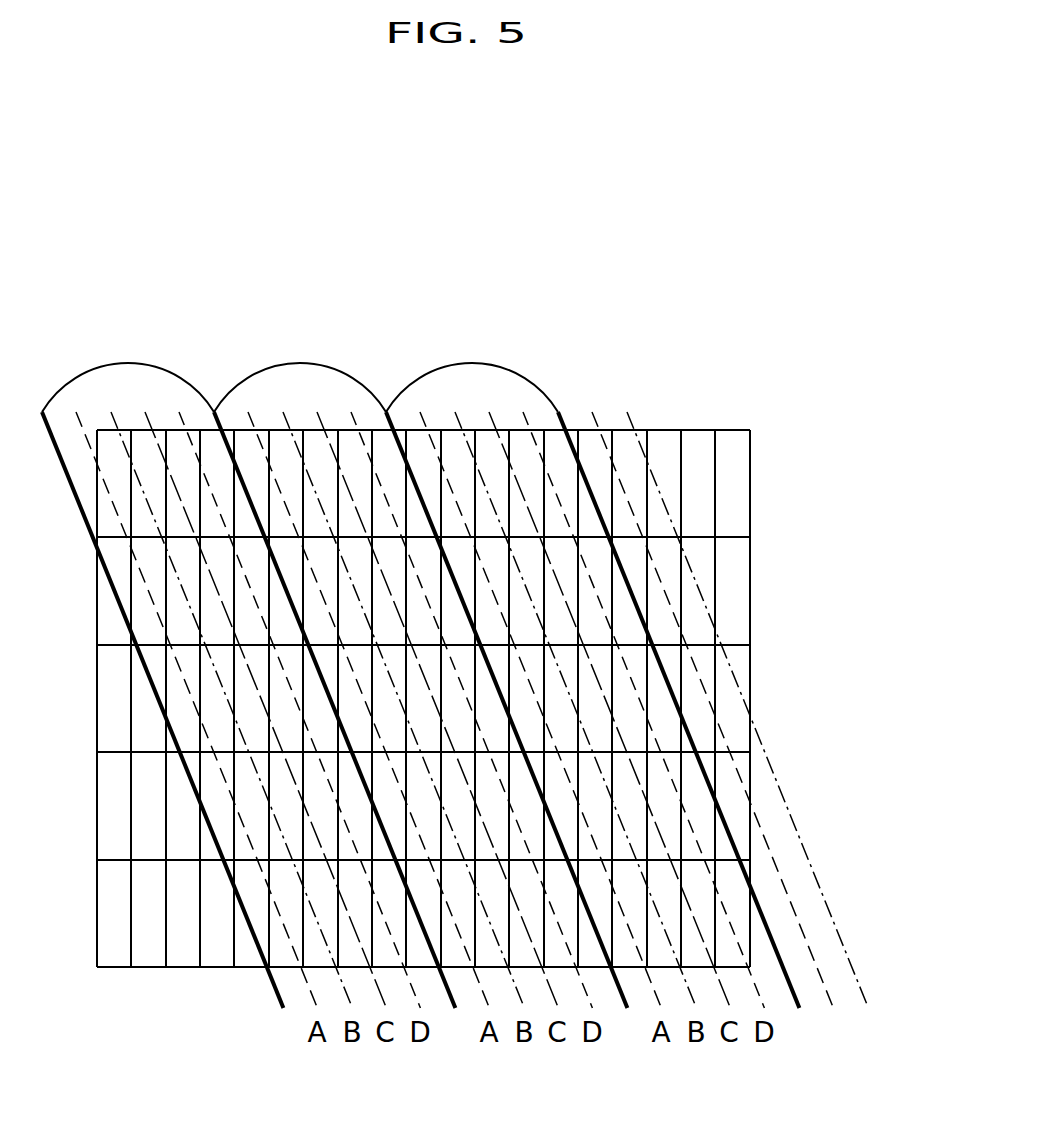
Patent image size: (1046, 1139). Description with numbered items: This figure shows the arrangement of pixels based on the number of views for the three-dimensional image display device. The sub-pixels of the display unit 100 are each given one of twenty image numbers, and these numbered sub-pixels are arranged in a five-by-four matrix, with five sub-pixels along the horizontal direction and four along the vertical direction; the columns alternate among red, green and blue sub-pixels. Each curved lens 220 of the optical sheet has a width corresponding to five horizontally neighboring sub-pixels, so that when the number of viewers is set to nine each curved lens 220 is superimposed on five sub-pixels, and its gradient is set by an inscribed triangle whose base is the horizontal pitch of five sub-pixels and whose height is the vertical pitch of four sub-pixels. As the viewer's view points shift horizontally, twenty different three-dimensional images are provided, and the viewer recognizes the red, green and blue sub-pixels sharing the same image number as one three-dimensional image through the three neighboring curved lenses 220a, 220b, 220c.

The display unit 100 is at (105, 992).
The curved lens 220 is at (128, 291).
The first curved lens 220a is at (131, 366).
The second curved lens 220b is at (303, 366).
The third curved lens 220c is at (475, 366).